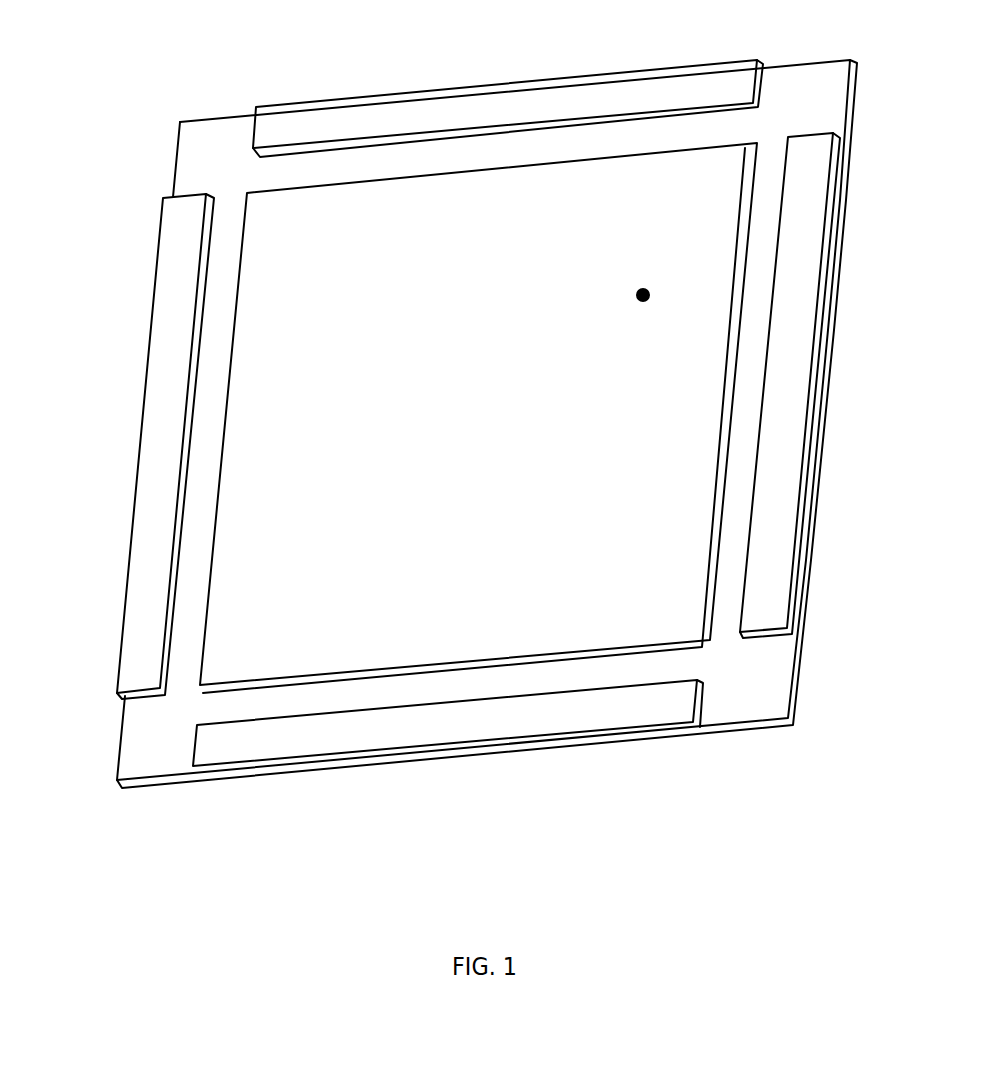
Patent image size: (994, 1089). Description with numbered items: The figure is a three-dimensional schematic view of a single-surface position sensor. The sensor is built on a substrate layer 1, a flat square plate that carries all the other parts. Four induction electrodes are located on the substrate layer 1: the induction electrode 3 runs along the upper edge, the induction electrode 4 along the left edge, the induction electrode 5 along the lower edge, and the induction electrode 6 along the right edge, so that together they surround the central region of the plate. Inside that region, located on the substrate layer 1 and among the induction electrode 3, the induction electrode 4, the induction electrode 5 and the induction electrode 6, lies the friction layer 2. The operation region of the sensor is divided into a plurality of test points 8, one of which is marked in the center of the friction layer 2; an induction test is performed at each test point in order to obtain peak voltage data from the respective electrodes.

The substrate layer 1 is at (747, 675).
The friction layer 2 is at (288, 212).
The induction electrode 3 is at (723, 87).
The induction electrode 4 is at (160, 413).
The induction electrode 5 is at (247, 742).
The induction electrode 6 is at (780, 445).
The test point 8 is at (648, 292).